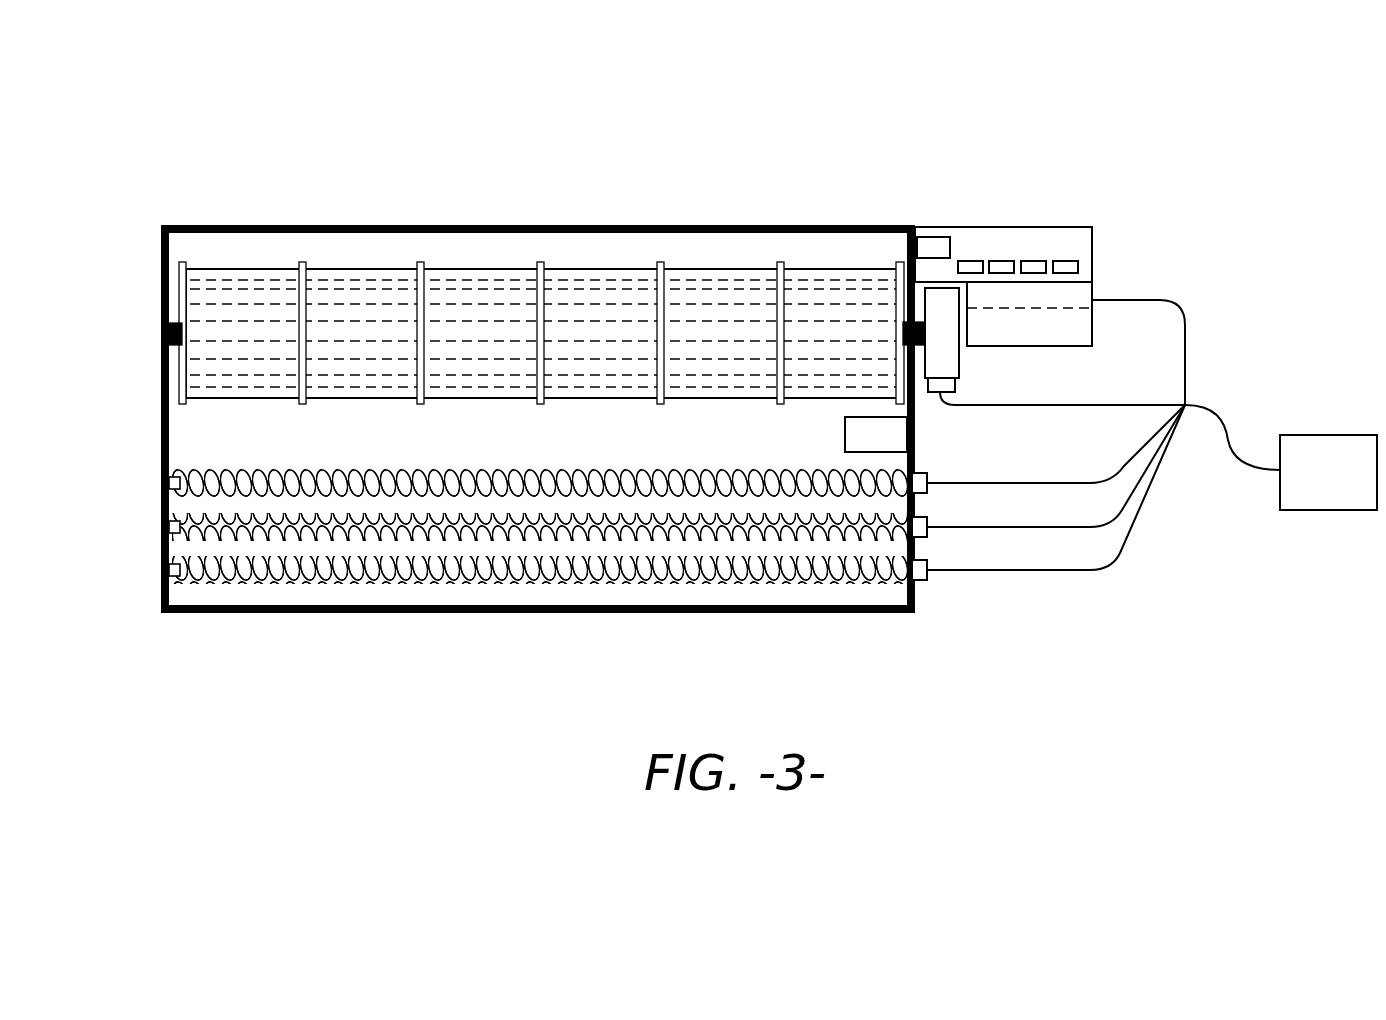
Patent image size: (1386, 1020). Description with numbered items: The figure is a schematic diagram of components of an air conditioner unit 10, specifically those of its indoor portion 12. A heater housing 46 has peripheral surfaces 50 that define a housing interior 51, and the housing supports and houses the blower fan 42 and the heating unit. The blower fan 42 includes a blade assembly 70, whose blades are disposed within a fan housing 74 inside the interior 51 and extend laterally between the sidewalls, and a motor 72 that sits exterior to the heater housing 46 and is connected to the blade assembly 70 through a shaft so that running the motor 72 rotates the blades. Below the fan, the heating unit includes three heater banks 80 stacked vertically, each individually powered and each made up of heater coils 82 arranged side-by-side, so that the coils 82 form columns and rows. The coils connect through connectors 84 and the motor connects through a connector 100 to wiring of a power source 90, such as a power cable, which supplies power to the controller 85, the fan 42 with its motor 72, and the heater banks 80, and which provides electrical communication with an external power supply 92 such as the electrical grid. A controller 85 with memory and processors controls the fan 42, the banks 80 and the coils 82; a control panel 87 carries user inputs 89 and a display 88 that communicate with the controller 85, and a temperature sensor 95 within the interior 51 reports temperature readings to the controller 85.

The air conditioner unit 10 is at (505, 151).
The indoor portion 12 is at (148, 596).
The blower fan 42 is at (820, 256).
The heater housing 46 is at (327, 222).
The peripheral surfaces 50 is at (455, 225).
The housing interior 51 is at (547, 385).
The blade assembly 70 is at (706, 296).
The motor 72 is at (940, 305).
The fan housing 74 is at (590, 303).
The heater banks 80 is at (274, 502).
The heater coils 82 is at (418, 497).
The electrical connectors 84 is at (934, 538).
The controller 85 is at (1076, 290).
The control panel 87 is at (1012, 248).
The display 88 is at (930, 248).
The user inputs 89 is at (1063, 266).
The power source 90 is at (1242, 425).
The power supply 92 is at (1328, 472).
The temperature sensor 95 is at (845, 425).
The motor connector 100 is at (960, 385).